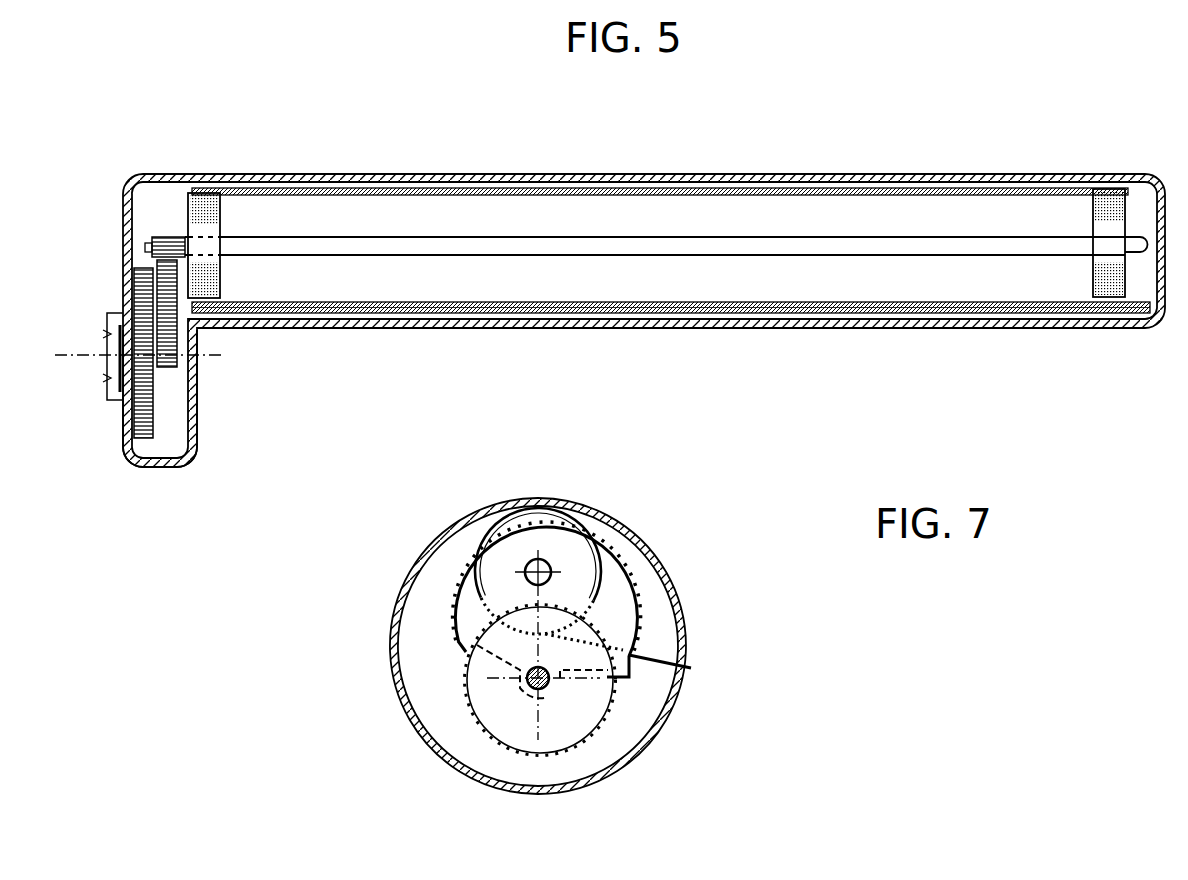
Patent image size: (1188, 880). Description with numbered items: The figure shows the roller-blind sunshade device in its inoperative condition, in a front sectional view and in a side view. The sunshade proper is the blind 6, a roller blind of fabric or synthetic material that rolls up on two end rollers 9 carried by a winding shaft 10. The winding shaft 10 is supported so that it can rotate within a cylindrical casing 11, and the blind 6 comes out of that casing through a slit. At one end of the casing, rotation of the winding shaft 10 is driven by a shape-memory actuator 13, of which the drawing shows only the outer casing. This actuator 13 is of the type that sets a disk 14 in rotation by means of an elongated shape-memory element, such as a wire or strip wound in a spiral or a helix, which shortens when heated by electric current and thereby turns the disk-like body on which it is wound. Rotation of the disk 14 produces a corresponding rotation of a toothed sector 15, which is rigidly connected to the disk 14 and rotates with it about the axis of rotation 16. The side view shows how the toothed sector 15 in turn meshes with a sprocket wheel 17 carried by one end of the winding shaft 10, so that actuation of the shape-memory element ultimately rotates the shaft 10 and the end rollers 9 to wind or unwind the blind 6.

In FIG. 5, the sunshade blind 6 is at (425, 190).
In FIG. 7, the sunshade blind 6 is at (653, 665).
In FIG. 5, the end rollers 9 is at (222, 273).
In FIG. 7, the end rollers 9 is at (568, 540).
In FIG. 5, the winding shaft 10 is at (568, 245).
In FIG. 5, the cylindrical casing 11 is at (316, 168).
In FIG. 5, the shape-memory actuator 13 is at (114, 260).
In FIG. 7, the shape-memory actuator 13 is at (409, 739).
In FIG. 5, the disk 14 is at (150, 452).
In FIG. 7, the disk 14 is at (588, 737).
In FIG. 5, the toothed sector 15 is at (176, 370).
In FIG. 7, the toothed sector 15 is at (612, 622).
In FIG. 5, the axis of rotation 16 is at (100, 358).
In FIG. 7, the axis of rotation 16 is at (534, 686).
In FIG. 5, the sprocket wheel 17 is at (168, 237).
In FIG. 7, the sprocket wheel 17 is at (530, 563).